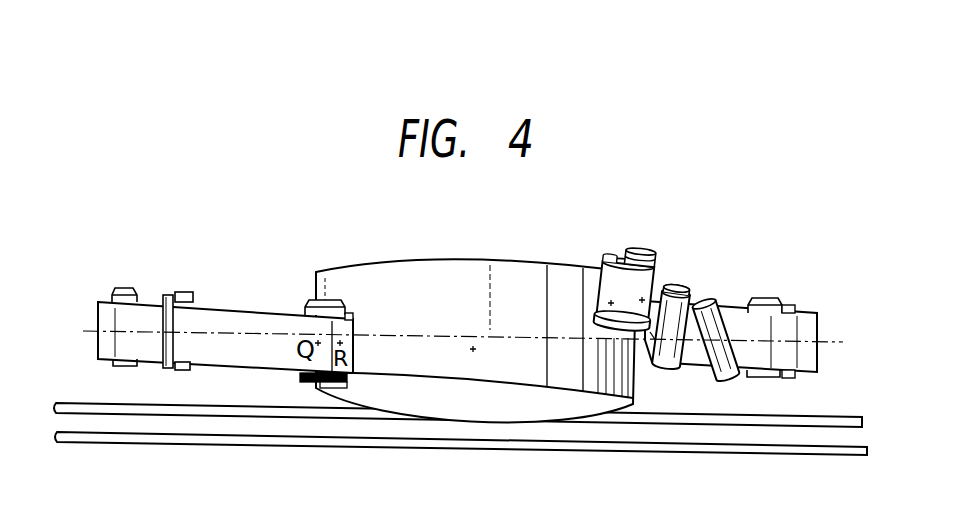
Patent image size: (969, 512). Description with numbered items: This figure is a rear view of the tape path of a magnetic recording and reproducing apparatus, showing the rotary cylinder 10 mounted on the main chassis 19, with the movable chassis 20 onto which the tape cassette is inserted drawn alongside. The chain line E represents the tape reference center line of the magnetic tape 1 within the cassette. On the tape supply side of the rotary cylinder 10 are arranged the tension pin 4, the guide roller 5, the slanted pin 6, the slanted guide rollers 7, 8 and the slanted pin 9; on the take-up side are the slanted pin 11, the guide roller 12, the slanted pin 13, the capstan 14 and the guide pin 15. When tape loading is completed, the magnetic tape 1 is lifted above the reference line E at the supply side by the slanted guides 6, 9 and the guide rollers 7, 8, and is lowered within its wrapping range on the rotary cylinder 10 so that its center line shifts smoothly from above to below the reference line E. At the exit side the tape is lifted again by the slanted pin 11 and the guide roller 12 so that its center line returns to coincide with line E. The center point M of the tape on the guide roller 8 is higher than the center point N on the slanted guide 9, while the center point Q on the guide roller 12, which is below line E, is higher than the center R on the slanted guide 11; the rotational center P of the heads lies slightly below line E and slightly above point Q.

The magnetic tape 1 is at (817, 316).
The tension pin 4 is at (792, 305).
The guide roller 5 is at (765, 297).
The slanted pin 6 is at (707, 297).
The slanted guide roller 7 is at (676, 288).
The slanted guide roller 8 is at (640, 248).
The slanted pin 9 is at (610, 260).
The rotary cylinder 10 is at (477, 268).
The slanted pin 11 is at (350, 312).
The guide roller 12 is at (325, 300).
The slanted pin 13 is at (182, 293).
The capstan 14 is at (167, 295).
The guide pin 15 is at (120, 288).
The main chassis 19 is at (855, 455).
The movable chassis 20 is at (860, 413).